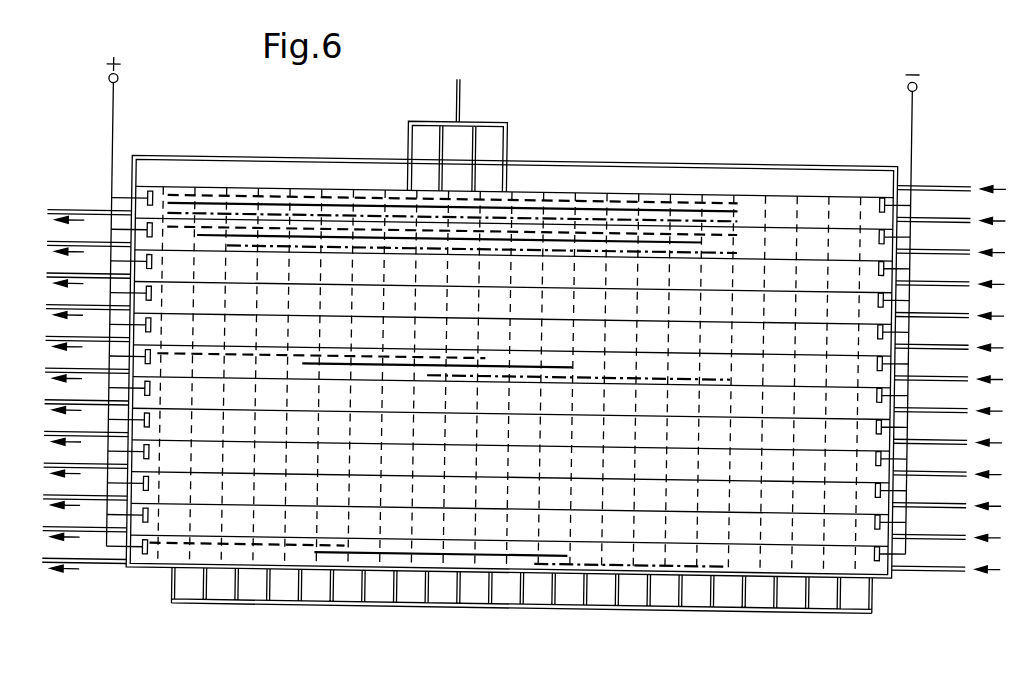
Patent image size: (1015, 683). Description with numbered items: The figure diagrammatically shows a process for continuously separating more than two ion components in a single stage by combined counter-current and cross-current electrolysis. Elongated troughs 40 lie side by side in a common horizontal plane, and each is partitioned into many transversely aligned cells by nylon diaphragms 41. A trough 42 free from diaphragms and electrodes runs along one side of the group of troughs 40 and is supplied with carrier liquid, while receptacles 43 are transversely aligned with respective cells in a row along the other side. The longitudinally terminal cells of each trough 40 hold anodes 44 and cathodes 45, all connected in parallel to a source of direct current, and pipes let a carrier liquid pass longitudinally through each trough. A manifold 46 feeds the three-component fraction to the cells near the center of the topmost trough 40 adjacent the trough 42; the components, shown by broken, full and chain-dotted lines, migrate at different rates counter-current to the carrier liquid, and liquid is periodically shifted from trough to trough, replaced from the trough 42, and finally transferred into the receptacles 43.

The elongated trough 40 is at (233, 560).
The nylon diaphragm 41 is at (284, 561).
The trough free from diaphragms 42 is at (588, 177).
The receptacle 43 is at (628, 602).
The anode 44 is at (147, 194).
The cathode 45 is at (875, 200).
The manifold 46 is at (457, 100).